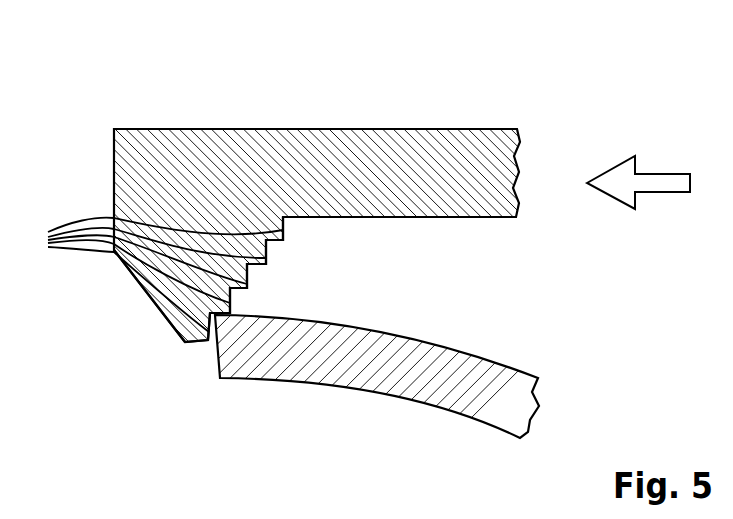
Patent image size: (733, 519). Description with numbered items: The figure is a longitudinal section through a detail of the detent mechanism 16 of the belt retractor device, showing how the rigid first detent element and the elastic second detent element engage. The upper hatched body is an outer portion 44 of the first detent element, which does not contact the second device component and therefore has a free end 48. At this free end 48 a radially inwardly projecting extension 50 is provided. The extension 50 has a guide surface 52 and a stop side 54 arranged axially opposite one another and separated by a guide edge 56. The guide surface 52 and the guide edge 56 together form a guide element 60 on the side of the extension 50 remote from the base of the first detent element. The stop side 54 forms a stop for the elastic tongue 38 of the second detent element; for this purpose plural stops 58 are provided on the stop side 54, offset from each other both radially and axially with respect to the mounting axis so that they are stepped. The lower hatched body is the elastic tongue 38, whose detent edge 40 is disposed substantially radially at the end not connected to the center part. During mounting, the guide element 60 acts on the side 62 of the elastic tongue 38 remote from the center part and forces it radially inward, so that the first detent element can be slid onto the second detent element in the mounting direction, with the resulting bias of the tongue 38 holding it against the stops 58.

The detent mechanism 16 is at (580, 108).
The elastic tongue 38 is at (308, 376).
The detent edge 40 is at (213, 366).
The outer portion 44 is at (366, 197).
The free end 48 is at (366, 186).
The radially inwardly projecting extension 50 is at (153, 170).
The guide surface 52 is at (162, 320).
The stop side 54 is at (300, 252).
The guide edge 56 is at (192, 345).
The stops 58 is at (149, 275).
The guide element 60 is at (130, 345).
The side of the elastic tongue 62 is at (308, 376).